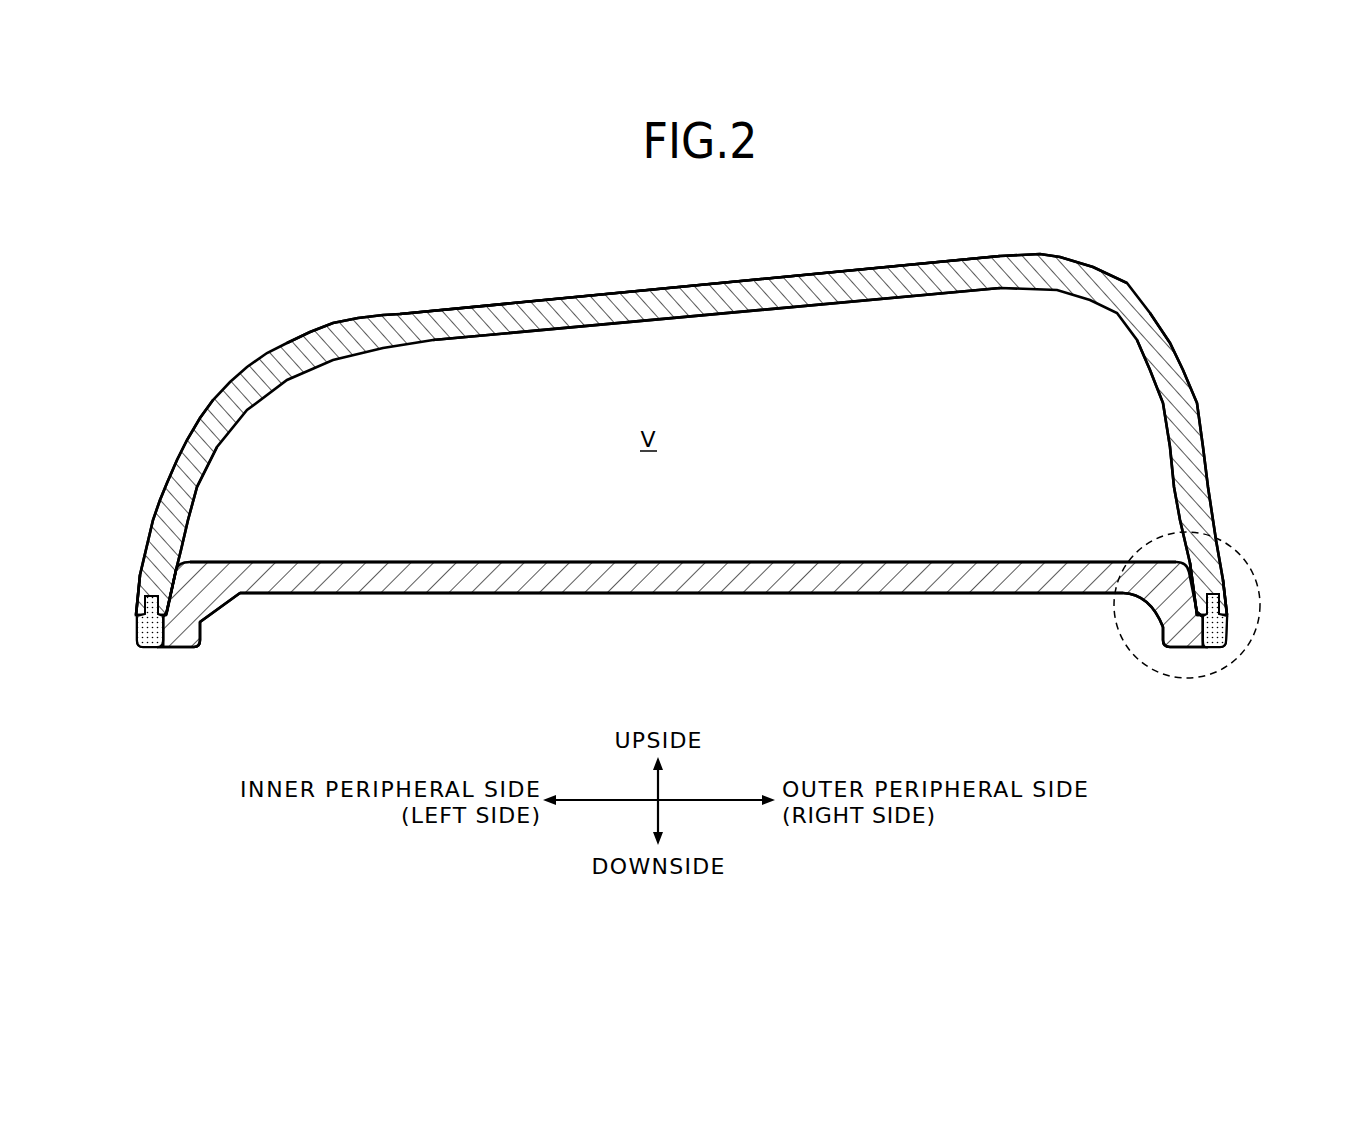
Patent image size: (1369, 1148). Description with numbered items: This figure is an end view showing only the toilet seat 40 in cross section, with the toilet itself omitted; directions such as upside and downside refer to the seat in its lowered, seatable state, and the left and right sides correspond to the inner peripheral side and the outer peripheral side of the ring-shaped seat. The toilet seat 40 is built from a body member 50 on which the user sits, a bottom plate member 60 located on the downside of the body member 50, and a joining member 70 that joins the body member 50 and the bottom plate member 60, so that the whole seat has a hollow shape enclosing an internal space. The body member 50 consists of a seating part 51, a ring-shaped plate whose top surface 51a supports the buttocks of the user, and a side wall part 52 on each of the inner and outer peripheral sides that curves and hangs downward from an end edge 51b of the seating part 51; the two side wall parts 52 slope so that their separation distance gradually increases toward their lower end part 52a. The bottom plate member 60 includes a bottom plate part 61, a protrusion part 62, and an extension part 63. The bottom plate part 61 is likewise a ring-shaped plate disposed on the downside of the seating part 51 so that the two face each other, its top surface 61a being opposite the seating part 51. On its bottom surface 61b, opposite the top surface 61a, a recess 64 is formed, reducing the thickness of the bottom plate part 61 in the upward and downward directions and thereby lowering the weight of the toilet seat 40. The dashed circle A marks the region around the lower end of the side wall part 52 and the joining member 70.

The toilet seat 40 is at (1133, 248).
The body member 50 is at (1124, 284).
The seating part 51 is at (660, 300).
The top surface 51a is at (562, 298).
The end edge 51b is at (370, 333).
The side wall part 52 is at (168, 498).
The lower end part 52a is at (157, 578).
The bottom plate member 60 is at (809, 597).
The bottom plate part 61 is at (627, 580).
The top surface 61a is at (707, 560).
The bottom surface 61b is at (728, 595).
The protrusion part 62 is at (183, 648).
The extension part 63 is at (157, 648).
The recess 64 is at (208, 623).
The joining member 70 is at (137, 633).
The enlarged region A is at (1240, 547).